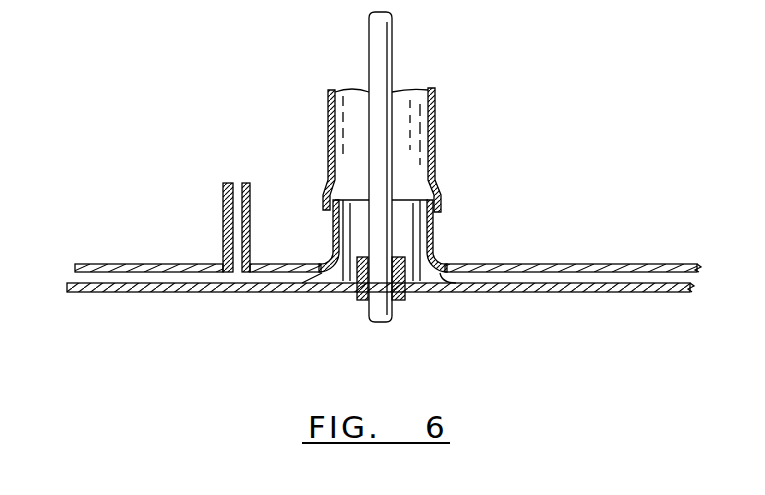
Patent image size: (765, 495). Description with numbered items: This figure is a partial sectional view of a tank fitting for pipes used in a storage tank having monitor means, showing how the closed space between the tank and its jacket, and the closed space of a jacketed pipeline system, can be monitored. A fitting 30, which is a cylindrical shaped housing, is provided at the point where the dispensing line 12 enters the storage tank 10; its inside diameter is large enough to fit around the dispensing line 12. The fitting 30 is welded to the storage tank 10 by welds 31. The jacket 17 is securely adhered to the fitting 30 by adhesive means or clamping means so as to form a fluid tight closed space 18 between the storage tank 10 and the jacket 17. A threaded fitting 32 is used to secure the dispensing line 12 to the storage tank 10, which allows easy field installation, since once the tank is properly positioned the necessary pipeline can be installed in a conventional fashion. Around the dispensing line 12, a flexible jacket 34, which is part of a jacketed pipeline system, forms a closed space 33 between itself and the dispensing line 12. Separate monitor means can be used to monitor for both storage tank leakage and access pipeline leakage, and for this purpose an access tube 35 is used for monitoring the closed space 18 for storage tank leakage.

The storage tank 10 is at (380, 317).
The dispensing line 12 is at (347, 167).
The jacket 17 is at (388, 235).
The closed space 18 is at (375, 241).
The fitting 30 is at (412, 240).
The welds 31 is at (490, 326).
The threaded fitting 32 is at (358, 310).
The closed space 33 is at (410, 97).
The flexible jacket 34 is at (415, 150).
The access tube 35 is at (267, 227).